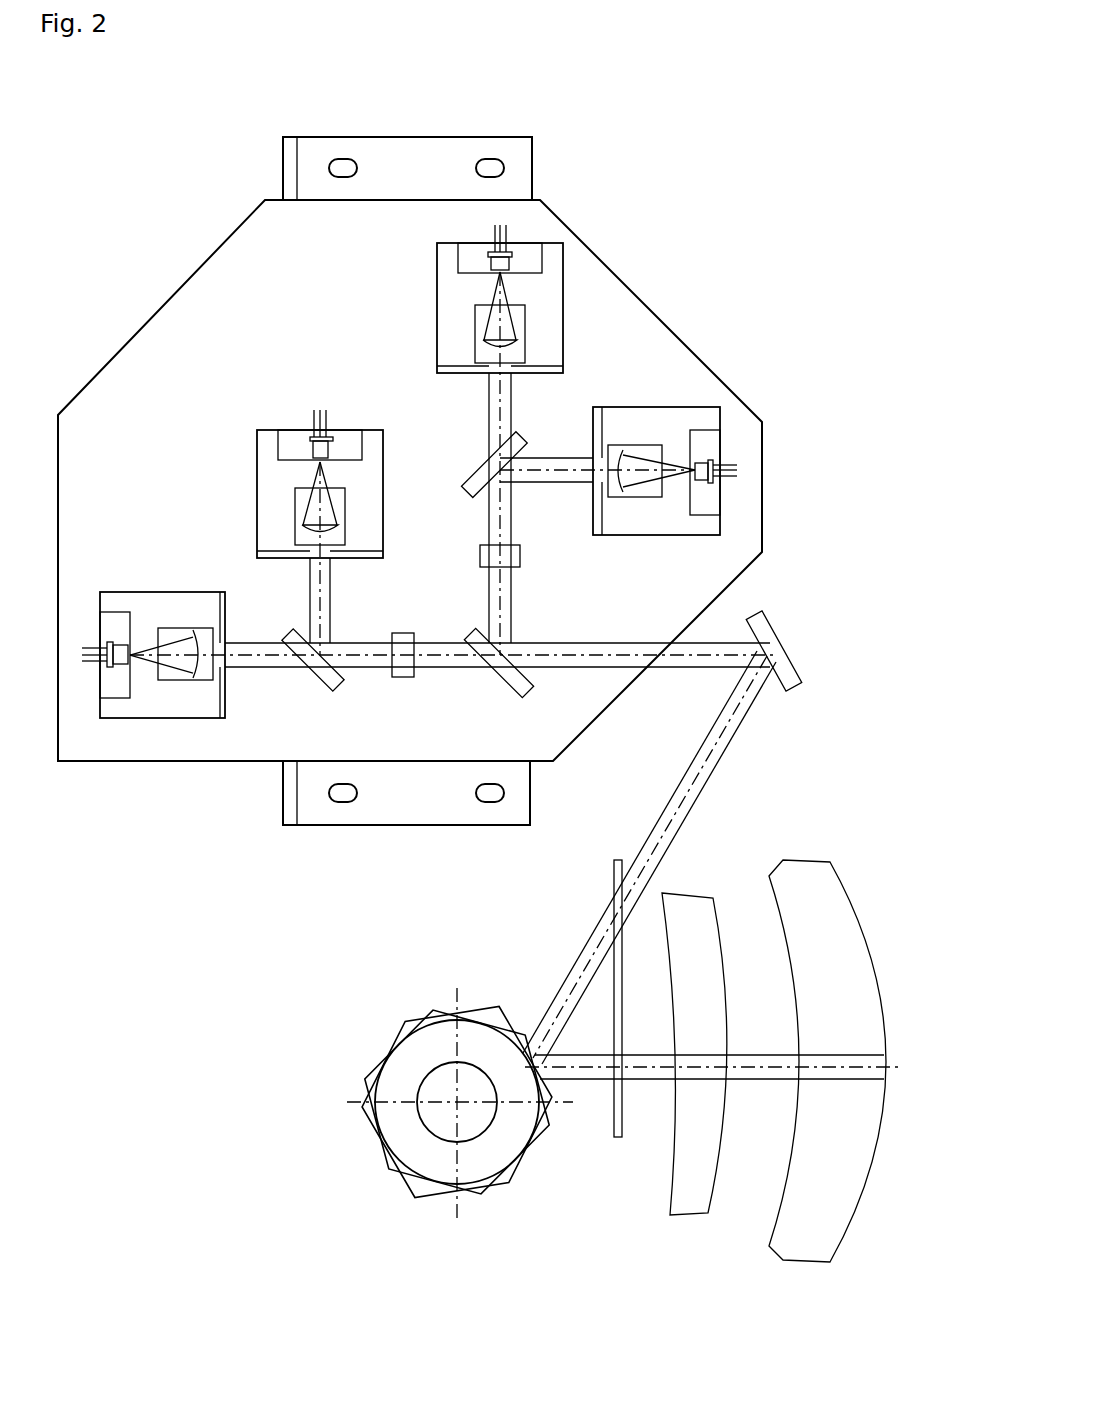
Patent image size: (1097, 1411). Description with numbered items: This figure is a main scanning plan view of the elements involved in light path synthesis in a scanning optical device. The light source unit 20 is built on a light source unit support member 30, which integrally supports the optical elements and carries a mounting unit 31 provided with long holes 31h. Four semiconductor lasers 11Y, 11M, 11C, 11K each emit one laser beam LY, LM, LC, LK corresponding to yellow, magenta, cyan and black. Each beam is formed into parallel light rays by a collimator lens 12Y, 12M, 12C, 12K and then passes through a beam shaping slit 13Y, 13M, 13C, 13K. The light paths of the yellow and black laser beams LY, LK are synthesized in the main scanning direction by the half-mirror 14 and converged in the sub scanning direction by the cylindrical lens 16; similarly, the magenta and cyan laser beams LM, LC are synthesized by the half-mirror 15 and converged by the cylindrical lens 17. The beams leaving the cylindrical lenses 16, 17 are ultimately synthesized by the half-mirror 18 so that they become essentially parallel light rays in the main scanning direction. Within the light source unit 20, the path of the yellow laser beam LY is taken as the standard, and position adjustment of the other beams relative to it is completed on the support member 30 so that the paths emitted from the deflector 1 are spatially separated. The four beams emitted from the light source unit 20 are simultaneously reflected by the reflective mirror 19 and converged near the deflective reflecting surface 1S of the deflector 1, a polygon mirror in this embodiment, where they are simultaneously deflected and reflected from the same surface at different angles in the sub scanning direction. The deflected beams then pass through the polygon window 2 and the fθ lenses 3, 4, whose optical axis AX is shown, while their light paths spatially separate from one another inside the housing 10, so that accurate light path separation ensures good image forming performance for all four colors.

The deflector 1 is at (417, 1140).
The deflective reflecting surface 1S is at (519, 1027).
The polygon window 2 is at (611, 1140).
The fθ lens 3 is at (697, 1190).
The fθ lens 4 is at (823, 1221).
The housing 10 is at (620, 823).
The semiconductor laser 11M is at (501, 253).
The semiconductor laser 11K is at (308, 437).
The semiconductor laser 11C is at (708, 462).
The semiconductor laser 11Y is at (118, 662).
The collimator lens 12M is at (520, 343).
The collimator lens 12K is at (302, 523).
The collimator lens 12C is at (627, 493).
The collimator lens 12Y is at (193, 670).
The slit 13M is at (543, 367).
The slit 13K is at (270, 550).
The slit 13C is at (605, 422).
The slit 13Y is at (225, 710).
The half-mirror 14 is at (333, 685).
The half-mirror 15 is at (470, 477).
The cylindrical lens 16 is at (404, 678).
The cylindrical lens 17 is at (523, 560).
The half-mirror 18 is at (518, 695).
The reflective mirror 19 is at (780, 658).
The light source unit 20 is at (653, 285).
The light source unit support member 30 is at (177, 380).
The mounting unit 31 is at (408, 170).
The long hole 31h is at (342, 160).
The laser beam LM is at (513, 408).
The laser beam LK is at (335, 597).
The laser beam LC is at (556, 487).
The laser beam LY is at (280, 670).
The optical axis AX is at (772, 1072).